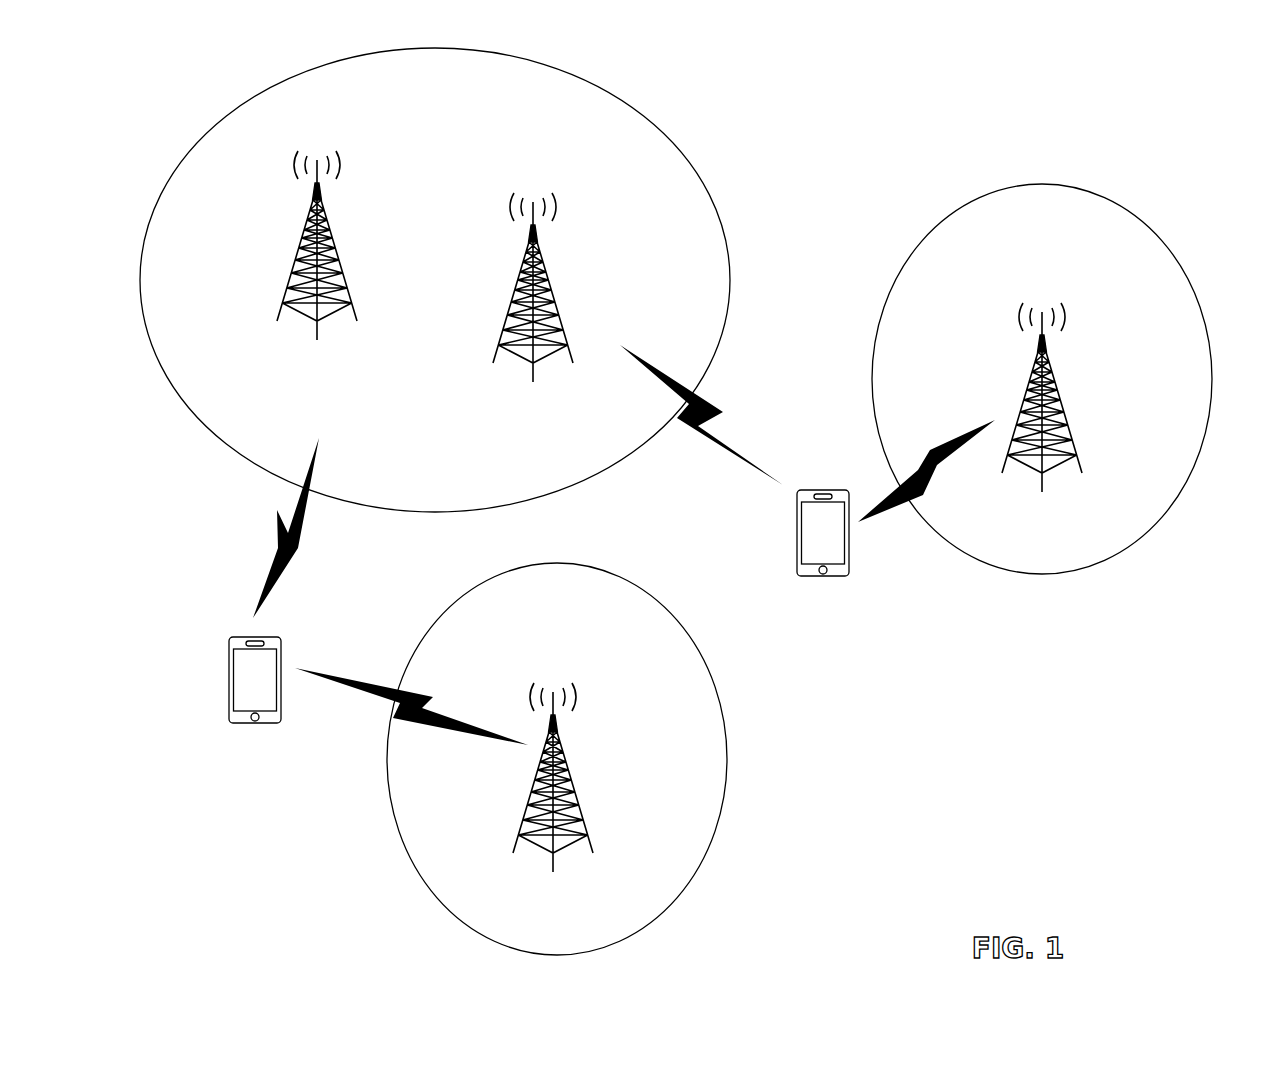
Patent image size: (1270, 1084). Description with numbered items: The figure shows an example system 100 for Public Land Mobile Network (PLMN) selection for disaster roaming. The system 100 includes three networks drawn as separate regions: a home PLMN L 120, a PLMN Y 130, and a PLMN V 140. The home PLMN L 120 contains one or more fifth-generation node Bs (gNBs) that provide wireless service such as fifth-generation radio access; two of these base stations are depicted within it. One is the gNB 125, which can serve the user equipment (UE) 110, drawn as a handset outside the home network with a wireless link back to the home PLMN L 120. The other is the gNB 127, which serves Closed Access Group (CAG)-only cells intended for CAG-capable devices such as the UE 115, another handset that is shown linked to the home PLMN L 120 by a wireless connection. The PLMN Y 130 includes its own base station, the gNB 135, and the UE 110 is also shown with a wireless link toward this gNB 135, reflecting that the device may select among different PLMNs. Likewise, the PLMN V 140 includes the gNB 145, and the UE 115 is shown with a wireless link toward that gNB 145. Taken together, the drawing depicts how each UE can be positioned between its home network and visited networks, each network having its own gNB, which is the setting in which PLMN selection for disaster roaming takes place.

The system 100 is at (1219, 106).
The UE 110 is at (832, 581).
The UE 115 is at (255, 710).
The home PLMN L 120 is at (435, 280).
The gNB 125 is at (532, 321).
The gNB 127 is at (318, 288).
The PLMN Y 130 is at (1042, 379).
The gNB 135 is at (1042, 425).
The PLMN V 140 is at (557, 759).
The gNB 145 is at (553, 805).